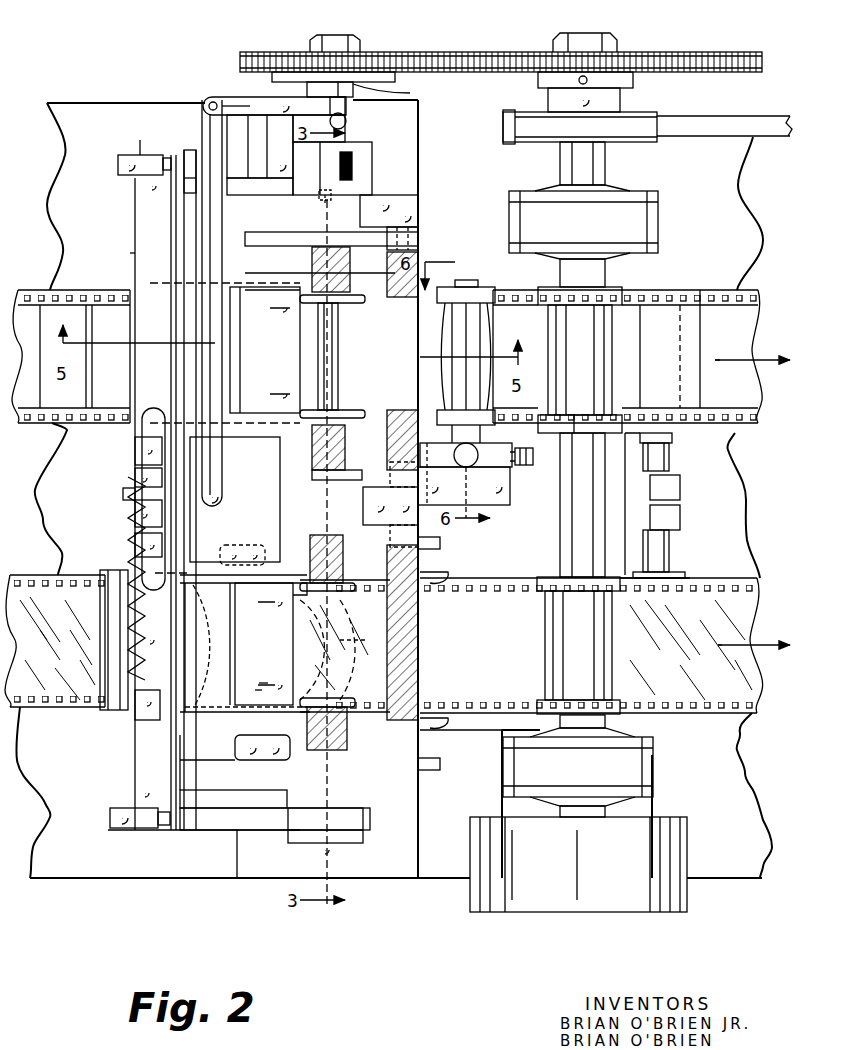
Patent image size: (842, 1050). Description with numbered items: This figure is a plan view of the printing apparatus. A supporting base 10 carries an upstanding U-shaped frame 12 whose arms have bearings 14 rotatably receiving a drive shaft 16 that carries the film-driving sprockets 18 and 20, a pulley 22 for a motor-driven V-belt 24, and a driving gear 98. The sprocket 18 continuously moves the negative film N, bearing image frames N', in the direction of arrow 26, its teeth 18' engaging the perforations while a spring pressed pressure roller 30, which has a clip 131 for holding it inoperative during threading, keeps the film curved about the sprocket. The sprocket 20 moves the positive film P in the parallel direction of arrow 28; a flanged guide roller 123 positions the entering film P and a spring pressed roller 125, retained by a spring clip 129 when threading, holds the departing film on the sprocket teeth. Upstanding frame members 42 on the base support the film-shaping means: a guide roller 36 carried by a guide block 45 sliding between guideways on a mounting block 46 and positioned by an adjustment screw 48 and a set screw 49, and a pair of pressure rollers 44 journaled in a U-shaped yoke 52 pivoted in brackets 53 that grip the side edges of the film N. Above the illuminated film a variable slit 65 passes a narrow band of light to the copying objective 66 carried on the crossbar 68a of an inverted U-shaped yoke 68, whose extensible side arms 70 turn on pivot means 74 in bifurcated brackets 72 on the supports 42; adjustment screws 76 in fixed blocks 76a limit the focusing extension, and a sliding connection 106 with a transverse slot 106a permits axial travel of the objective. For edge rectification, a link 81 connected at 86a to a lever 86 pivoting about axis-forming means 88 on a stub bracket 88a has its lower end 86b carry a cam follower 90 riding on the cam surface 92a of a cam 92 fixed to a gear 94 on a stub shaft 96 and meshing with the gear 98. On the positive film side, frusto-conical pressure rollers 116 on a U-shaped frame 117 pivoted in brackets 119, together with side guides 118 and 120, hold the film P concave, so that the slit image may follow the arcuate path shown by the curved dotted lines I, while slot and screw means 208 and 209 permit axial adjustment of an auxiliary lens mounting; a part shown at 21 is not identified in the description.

The supporting base 10 is at (752, 804).
The U-shaped frame 12 is at (512, 738).
The bearing 14 is at (655, 218).
The drive shaft 16 is at (606, 160).
The film-driving sprocket 18 is at (580, 360).
The sprocket teeth 18' is at (582, 404).
The film-driving sprocket 20 is at (578, 573).
The roller 21 is at (520, 900).
The pulley 22 is at (655, 112).
The V-belt 24 is at (720, 122).
The arrow 26 is at (745, 360).
The arrow 28 is at (744, 645).
The pressure roller 30 is at (680, 430).
The guide roller 36 is at (480, 287).
The upstanding frame members 42 is at (248, 775).
The pressure rollers 44 is at (362, 303).
The guide block 45 is at (485, 462).
The mounting block 46 is at (400, 449).
The adjustment screw 48 is at (465, 474).
The set screw 49 is at (530, 467).
The U-shaped yoke 52 is at (336, 250).
The brackets 53 is at (418, 235).
The slit 65 is at (340, 375).
The objective 66 is at (292, 417).
The inverted U-shaped yoke 68 is at (135, 217).
The crossbar 68a is at (135, 253).
The side arms 70 is at (193, 160).
The bifurcated brackets 72 is at (372, 150).
The pivot means 74 is at (342, 192).
The adjustment screws 76 is at (118, 164).
The fixed blocks 76a is at (140, 155).
The link 81 is at (215, 228).
The lever 86 is at (240, 97).
The connection of link to lever 86a is at (207, 100).
The lower free end portion 86b is at (350, 121).
The axis-forming means 88 is at (276, 101).
The stub bracket 88a is at (252, 135).
The cam follower 90 is at (395, 105).
The rotatable cam 92 is at (373, 83).
The cam surface 92a is at (397, 91).
The gear 94 is at (278, 52).
The stub shaft 96 is at (372, 150).
The driving gear 98 is at (492, 52).
The sliding connection 106 is at (123, 480).
The slot 106a is at (140, 428).
The frusto-conical pressure rollers 116 is at (300, 600).
The U-shaped frame 117 is at (410, 625).
The side guides 118 is at (265, 562).
The brackets 119 is at (418, 542).
The side guides 120 is at (445, 576).
The flanged guide roller 123 is at (115, 663).
The spring pressed roller 125 is at (687, 578).
The spring clip 129 is at (668, 520).
The clip 131 is at (668, 488).
The slot and screw means 208 is at (262, 688).
The slot and screw means 209 is at (262, 683).
The negative strip film N is at (401, 356).
The frames of photographic images N' is at (712, 279).
The positive film P is at (755, 616).
The curved dotted lines I is at (356, 650).